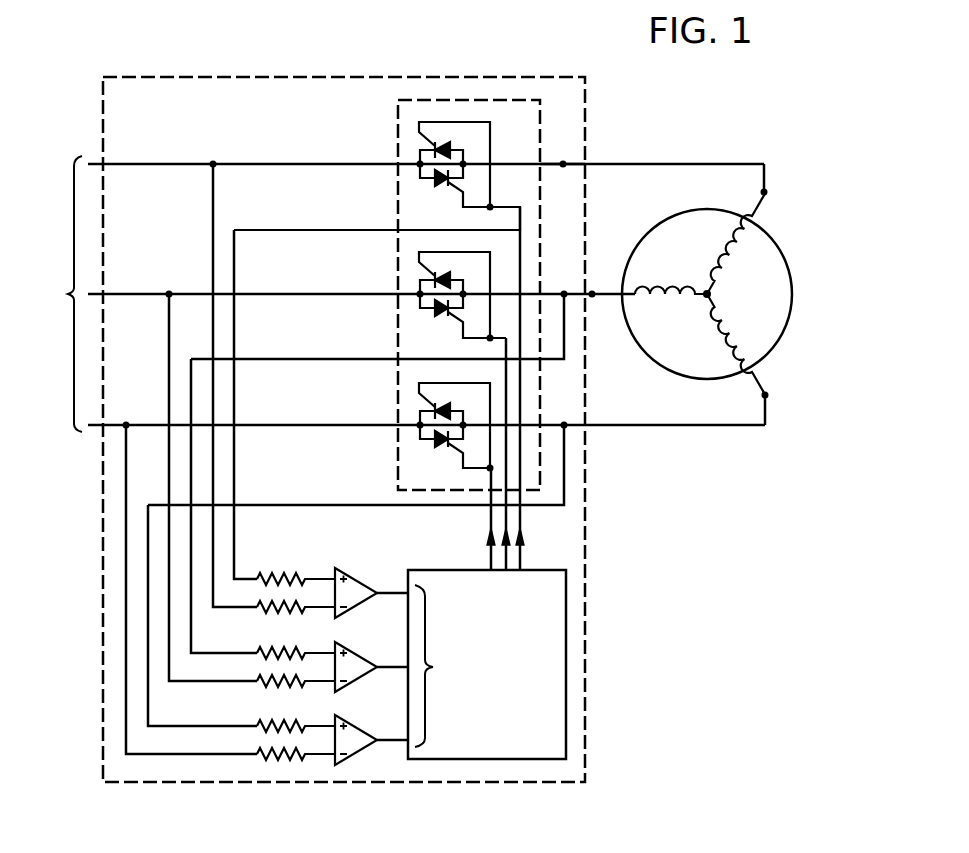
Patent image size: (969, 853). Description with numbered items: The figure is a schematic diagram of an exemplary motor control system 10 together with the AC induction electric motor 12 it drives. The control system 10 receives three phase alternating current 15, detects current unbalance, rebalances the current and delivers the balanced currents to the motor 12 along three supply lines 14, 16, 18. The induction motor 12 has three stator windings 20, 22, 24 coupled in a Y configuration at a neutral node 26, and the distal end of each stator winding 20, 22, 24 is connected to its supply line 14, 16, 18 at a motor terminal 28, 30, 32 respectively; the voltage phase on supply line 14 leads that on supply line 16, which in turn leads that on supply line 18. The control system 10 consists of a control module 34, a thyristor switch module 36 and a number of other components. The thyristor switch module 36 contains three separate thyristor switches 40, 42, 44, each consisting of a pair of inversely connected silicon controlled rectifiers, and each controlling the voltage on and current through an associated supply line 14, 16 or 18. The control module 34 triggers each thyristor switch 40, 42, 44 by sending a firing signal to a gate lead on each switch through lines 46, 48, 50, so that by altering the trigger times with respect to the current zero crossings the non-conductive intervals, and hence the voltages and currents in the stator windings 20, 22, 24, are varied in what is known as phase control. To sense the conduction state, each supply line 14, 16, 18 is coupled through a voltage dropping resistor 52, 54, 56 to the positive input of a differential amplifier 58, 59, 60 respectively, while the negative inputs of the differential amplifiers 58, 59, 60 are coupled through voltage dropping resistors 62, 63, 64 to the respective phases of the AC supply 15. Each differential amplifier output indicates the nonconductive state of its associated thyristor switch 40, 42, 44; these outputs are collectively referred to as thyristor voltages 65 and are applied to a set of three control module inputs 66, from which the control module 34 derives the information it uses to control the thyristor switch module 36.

The motor control system 10 is at (587, 533).
The AC induction electric motor 12 is at (712, 278).
The supply line 14 is at (650, 164).
The three phase alternating current 15 is at (66, 397).
The supply line 16 is at (615, 297).
The supply line 18 is at (682, 428).
The stator winding 20 is at (723, 247).
The stator winding 22 is at (657, 288).
The stator winding 24 is at (737, 333).
The neutral node 26 is at (705, 300).
The motor terminal 28 is at (563, 163).
The motor terminal 30 is at (564, 292).
The motor terminal 32 is at (565, 428).
The control module 34 is at (521, 745).
The thyristor switch module 36 is at (513, 108).
The thyristor switch 40 is at (418, 160).
The thyristor switch 42 is at (418, 292).
The thyristor switch 44 is at (398, 412).
The line 46 is at (522, 553).
The line 48 is at (505, 515).
The line 50 is at (491, 558).
The voltage dropping resistor 52 is at (282, 570).
The voltage dropping resistor 54 is at (278, 647).
The voltage dropping resistor 56 is at (260, 728).
The differential amplifier 58 is at (357, 573).
The differential amplifier 59 is at (368, 677).
The differential amplifier 60 is at (363, 750).
The voltage dropping resistor 62 is at (257, 605).
The voltage dropping resistor 63 is at (260, 692).
The voltage dropping resistor 64 is at (283, 760).
The thyristor voltages 65 is at (393, 747).
The control module inputs 66 is at (437, 666).